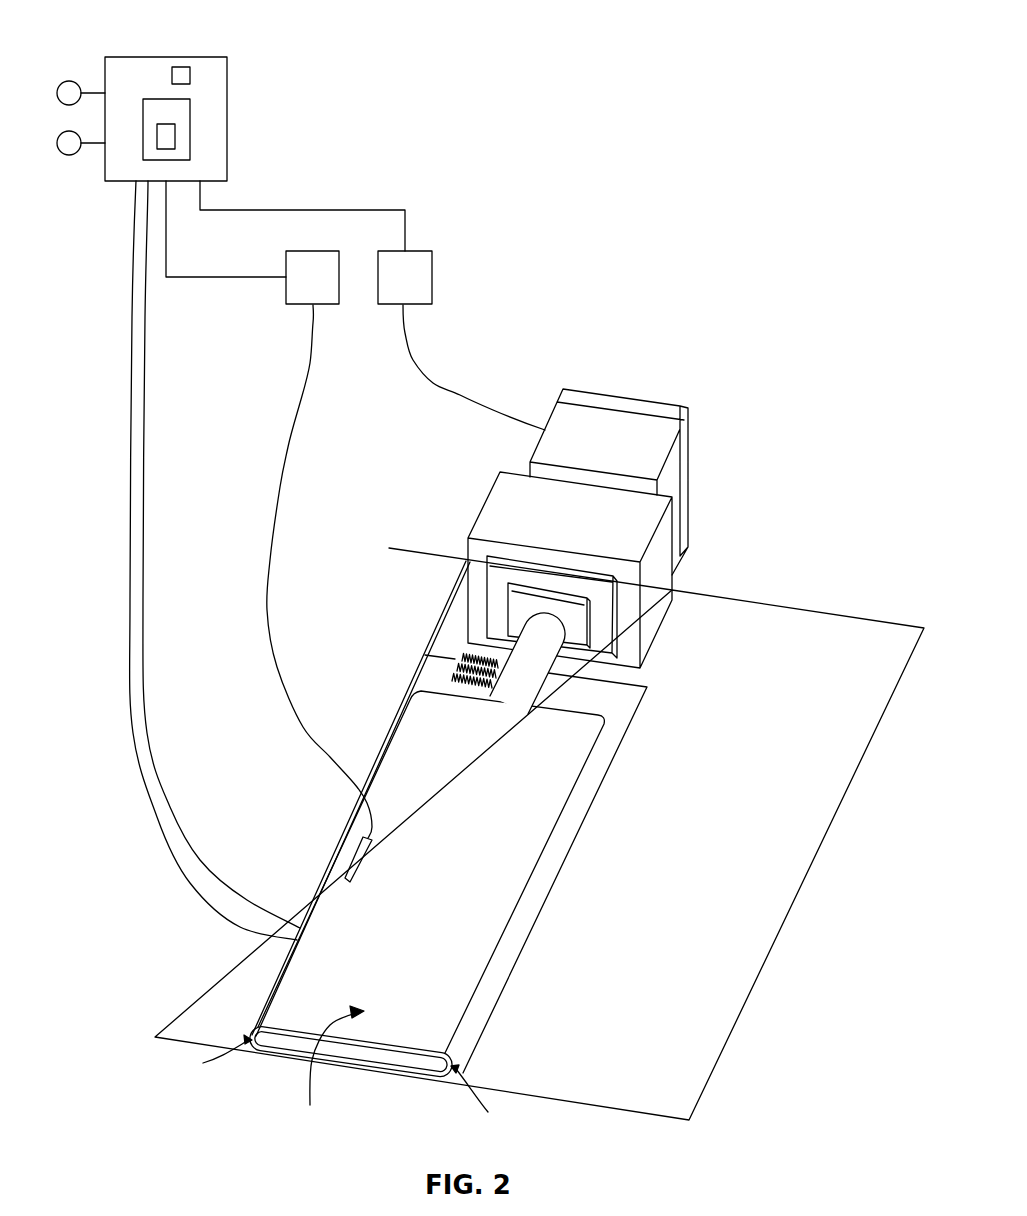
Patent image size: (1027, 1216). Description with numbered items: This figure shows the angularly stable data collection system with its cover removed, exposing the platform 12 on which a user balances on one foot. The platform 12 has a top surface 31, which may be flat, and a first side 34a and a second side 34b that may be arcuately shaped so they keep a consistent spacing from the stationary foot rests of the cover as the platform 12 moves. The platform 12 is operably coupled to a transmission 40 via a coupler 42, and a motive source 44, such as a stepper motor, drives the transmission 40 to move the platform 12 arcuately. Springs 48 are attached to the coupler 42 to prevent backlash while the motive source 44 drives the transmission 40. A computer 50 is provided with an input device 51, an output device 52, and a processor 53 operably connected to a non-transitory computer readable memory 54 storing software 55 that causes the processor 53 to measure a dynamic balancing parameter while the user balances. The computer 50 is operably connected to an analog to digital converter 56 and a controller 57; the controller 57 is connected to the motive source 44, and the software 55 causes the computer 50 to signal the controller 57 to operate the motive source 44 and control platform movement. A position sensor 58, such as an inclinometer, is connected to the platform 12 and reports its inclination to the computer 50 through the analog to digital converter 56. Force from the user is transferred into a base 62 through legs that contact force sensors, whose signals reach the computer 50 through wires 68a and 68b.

The platform 12 is at (272, 992).
The top surface 31 is at (329, 1076).
The first side 34a is at (204, 1058).
The second side 34b is at (495, 1099).
The transmission 40 is at (654, 617).
The coupler 42 is at (537, 662).
The motive source 44 is at (690, 478).
The springs 48 is at (462, 657).
The computer 50 is at (158, 56).
The input device 51 is at (69, 81).
The output device 52 is at (69, 156).
The processor 53 is at (190, 74).
The non-transitory computer readable memory 54 is at (190, 115).
The software 55 is at (175, 137).
The analog to digital converter 56 is at (311, 250).
The controller 57 is at (414, 250).
The position sensor 58 is at (355, 860).
The base 62 is at (759, 976).
The wire 68a is at (133, 728).
The wire 68b is at (147, 680).